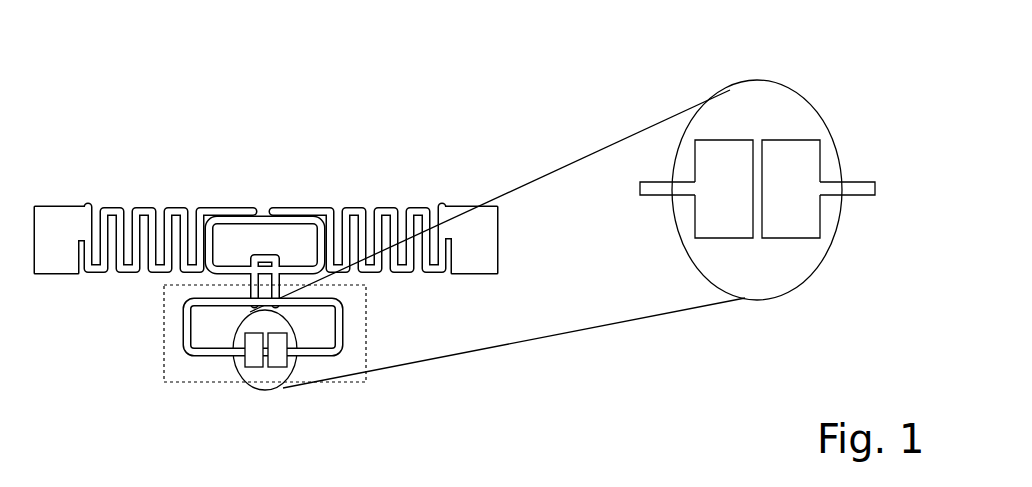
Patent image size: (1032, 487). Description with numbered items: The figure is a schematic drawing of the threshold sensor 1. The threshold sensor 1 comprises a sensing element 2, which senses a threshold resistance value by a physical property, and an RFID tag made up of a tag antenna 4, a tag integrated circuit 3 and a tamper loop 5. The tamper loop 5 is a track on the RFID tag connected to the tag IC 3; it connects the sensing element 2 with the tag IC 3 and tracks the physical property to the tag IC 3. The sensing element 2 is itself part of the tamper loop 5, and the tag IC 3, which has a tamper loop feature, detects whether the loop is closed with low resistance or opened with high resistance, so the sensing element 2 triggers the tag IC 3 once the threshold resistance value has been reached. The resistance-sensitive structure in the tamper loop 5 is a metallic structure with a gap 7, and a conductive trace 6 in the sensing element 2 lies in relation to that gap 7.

The threshold sensor 1 is at (418, 133).
The sensing element 2 is at (827, 122).
The tag integrated circuit 3 is at (265, 252).
The tag antenna 4 is at (146, 205).
The tamper loop 5 is at (163, 336).
The conductive trace 6 is at (347, 318).
The gap 7 is at (757, 243).